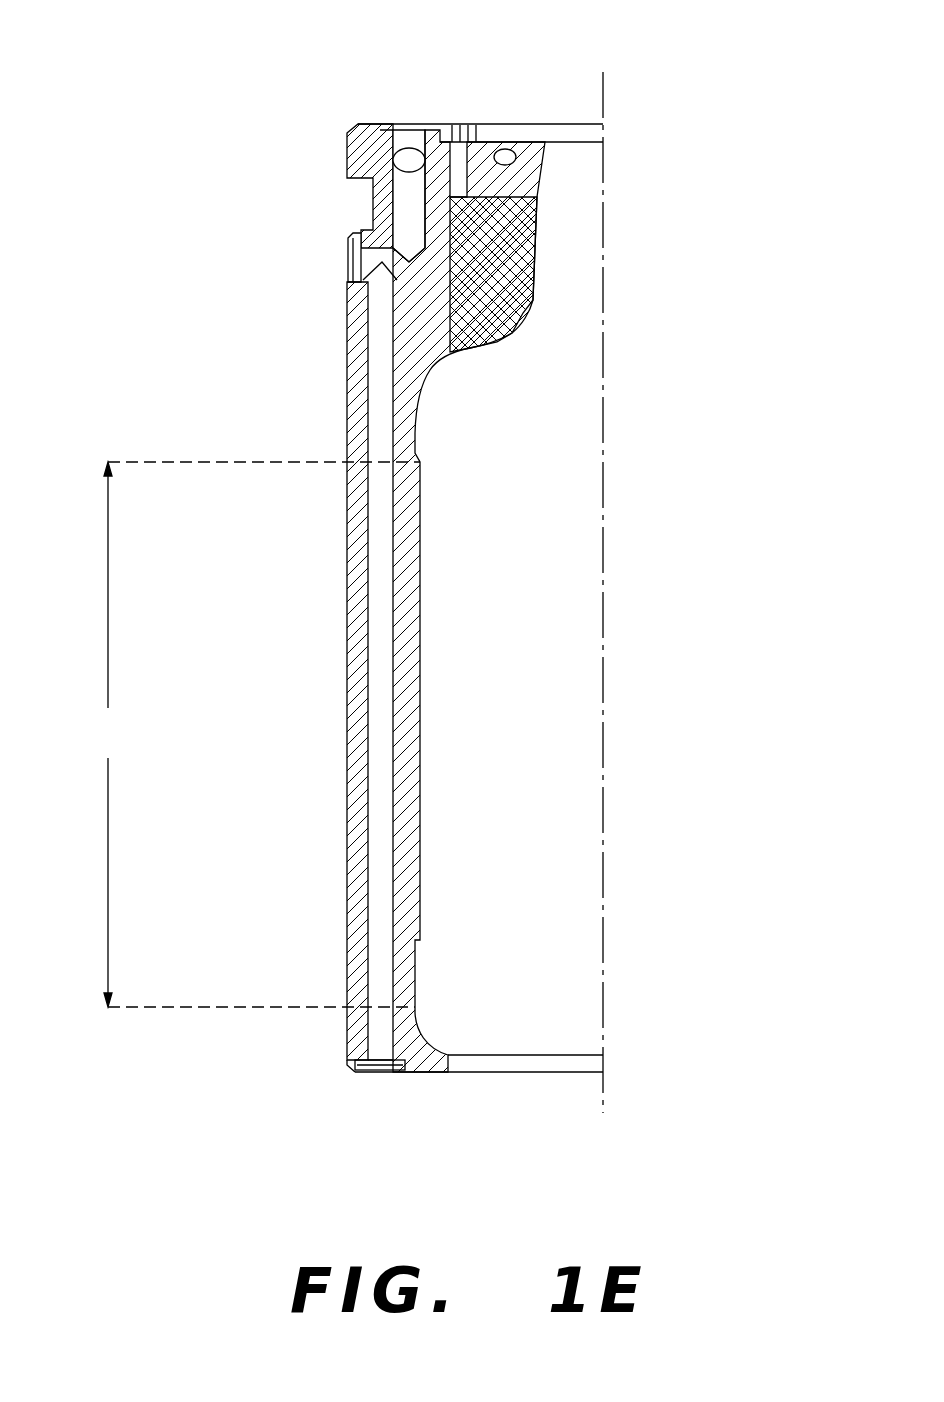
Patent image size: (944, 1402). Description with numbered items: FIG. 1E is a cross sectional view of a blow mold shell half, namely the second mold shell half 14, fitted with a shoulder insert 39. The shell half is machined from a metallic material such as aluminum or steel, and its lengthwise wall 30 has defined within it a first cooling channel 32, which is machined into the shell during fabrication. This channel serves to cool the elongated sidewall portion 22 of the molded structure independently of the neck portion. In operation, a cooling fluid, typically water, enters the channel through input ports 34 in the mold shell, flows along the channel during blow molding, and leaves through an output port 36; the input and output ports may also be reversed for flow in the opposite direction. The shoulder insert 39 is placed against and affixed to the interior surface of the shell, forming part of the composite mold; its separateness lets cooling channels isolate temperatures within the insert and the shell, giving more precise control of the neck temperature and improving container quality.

The second mold shell half 14 is at (676, 118).
The sidewall portion 22 is at (255, 734).
The lengthwise wall 30 is at (357, 555).
The first cooling channel 32 is at (383, 712).
The input ports 34 is at (413, 110).
The output port 36 is at (380, 1085).
The shoulder insert 39 is at (510, 257).